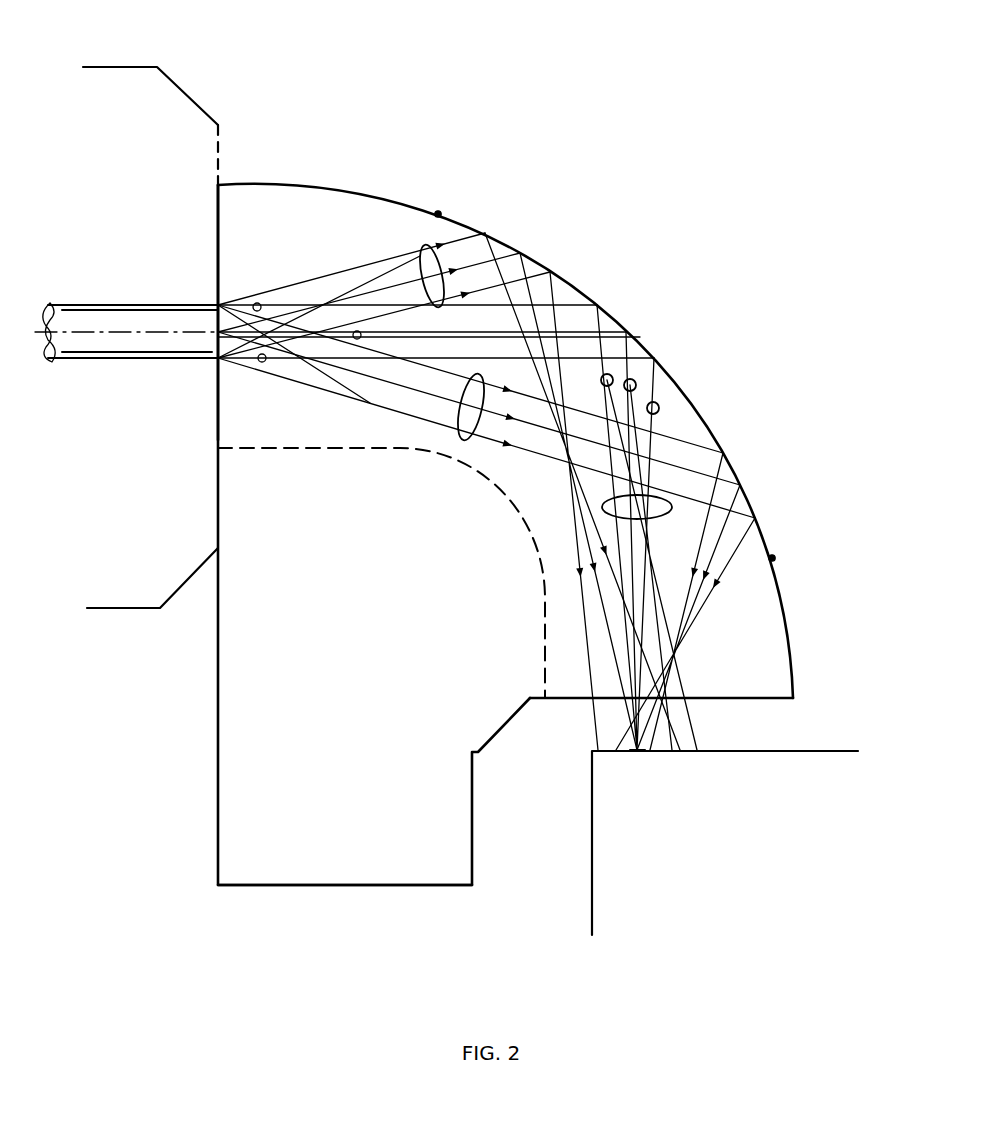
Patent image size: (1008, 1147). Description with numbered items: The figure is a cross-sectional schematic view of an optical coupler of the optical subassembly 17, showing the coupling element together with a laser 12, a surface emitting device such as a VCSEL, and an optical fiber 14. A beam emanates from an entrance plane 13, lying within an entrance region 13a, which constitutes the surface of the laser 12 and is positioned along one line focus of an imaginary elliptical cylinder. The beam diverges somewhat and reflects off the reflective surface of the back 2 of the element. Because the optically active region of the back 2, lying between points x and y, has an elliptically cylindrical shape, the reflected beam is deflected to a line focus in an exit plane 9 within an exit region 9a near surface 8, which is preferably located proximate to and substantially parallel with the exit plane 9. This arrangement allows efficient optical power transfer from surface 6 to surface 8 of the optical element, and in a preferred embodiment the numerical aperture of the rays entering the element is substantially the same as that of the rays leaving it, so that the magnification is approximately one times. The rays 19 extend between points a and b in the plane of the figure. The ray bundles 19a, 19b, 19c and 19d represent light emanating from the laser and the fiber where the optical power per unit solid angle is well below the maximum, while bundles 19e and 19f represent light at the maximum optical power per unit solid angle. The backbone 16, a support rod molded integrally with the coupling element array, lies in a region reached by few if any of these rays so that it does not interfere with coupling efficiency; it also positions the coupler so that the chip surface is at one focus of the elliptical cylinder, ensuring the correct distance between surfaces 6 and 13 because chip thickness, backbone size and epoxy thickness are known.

The back 2 is at (470, 222).
The surface 6 is at (770, 701).
The surface 8 is at (218, 670).
The exit plane 9 is at (218, 238).
The exit region 9a is at (152, 48).
The laser 12 is at (637, 752).
The entrance plane 13 is at (785, 752).
The entrance region 13a is at (872, 692).
The optical fiber 14 is at (118, 315).
The backbone 16 is at (353, 870).
The optical subassembly 17 is at (190, 812).
The rays 19 is at (603, 498).
The ray bundle 19a is at (612, 377).
The ray bundle 19b is at (659, 409).
The ray bundle 19c is at (460, 437).
The ray bundle 19d is at (420, 245).
The ray bundle 19e is at (636, 386).
The ray bundle 19f is at (350, 340).
The point a is at (572, 302).
The point b is at (673, 396).
The point x is at (447, 198).
The point y is at (782, 556).